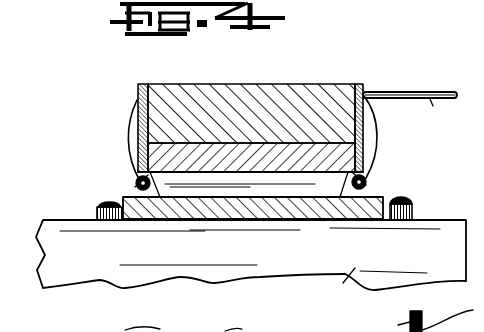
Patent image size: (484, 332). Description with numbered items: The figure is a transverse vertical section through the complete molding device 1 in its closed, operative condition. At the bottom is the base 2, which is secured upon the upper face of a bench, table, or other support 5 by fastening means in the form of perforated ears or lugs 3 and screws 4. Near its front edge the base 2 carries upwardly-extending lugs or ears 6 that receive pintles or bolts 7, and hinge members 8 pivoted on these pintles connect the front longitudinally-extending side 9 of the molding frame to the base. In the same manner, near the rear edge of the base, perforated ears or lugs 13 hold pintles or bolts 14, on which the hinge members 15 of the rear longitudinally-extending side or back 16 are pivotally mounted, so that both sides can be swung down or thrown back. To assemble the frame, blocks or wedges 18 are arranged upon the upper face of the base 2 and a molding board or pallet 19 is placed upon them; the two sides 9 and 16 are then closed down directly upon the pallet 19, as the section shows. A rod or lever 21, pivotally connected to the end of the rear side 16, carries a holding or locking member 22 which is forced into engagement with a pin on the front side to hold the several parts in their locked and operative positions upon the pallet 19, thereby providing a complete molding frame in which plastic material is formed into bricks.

The molding device 1 is at (251, 276).
The base 2 is at (310, 210).
The perforated ears or lugs 3 is at (106, 216).
The screws 4 is at (100, 206).
The support 5 is at (344, 292).
The upwardly-extending lugs or ears 6 is at (368, 192).
The pintles or bolts 7 is at (375, 170).
The hinge members 8 is at (372, 133).
The front longitudinally-extending side 9 is at (367, 86).
The perforated ears or lugs 13 is at (136, 187).
The pintles or bolts 14 is at (133, 178).
The hinge members 15 is at (132, 152).
The rear longitudinally-extending side or back 16 is at (137, 93).
The blocks or wedges 18 is at (222, 186).
The molding board or pallet 19 is at (270, 162).
The rods or levers 21 is at (441, 215).
The holding or locking member 22 is at (391, 319).